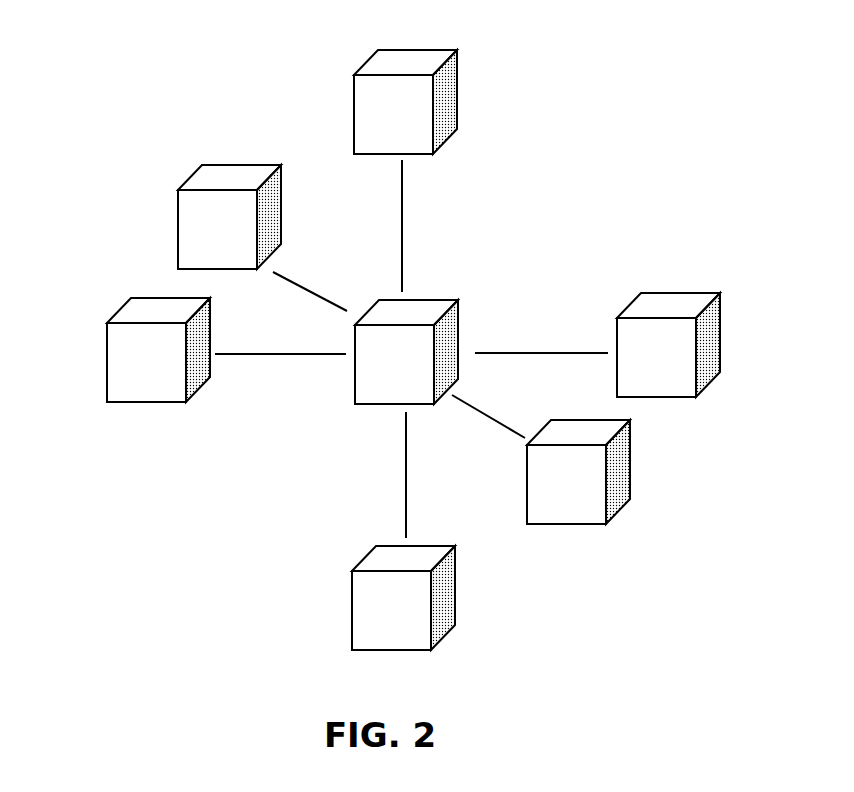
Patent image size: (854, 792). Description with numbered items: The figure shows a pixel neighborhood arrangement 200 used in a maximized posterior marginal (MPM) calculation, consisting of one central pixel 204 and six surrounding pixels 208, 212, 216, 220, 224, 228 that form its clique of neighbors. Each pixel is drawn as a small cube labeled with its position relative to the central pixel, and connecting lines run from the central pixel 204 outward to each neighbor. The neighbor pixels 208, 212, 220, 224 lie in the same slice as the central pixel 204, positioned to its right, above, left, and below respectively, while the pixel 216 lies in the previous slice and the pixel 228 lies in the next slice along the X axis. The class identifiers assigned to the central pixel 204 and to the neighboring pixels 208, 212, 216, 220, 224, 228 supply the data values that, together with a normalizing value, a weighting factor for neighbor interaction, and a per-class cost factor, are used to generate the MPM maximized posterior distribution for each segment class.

The pixel neighborhood arrangement 200 is at (62, 131).
The central pixel 204 is at (452, 300).
The surrounding pixel 208 is at (720, 305).
The surrounding pixel 212 is at (453, 72).
The surrounding pixel 216 is at (228, 172).
The surrounding pixel 220 is at (123, 318).
The surrounding pixel 224 is at (348, 595).
The surrounding pixel 228 is at (632, 485).